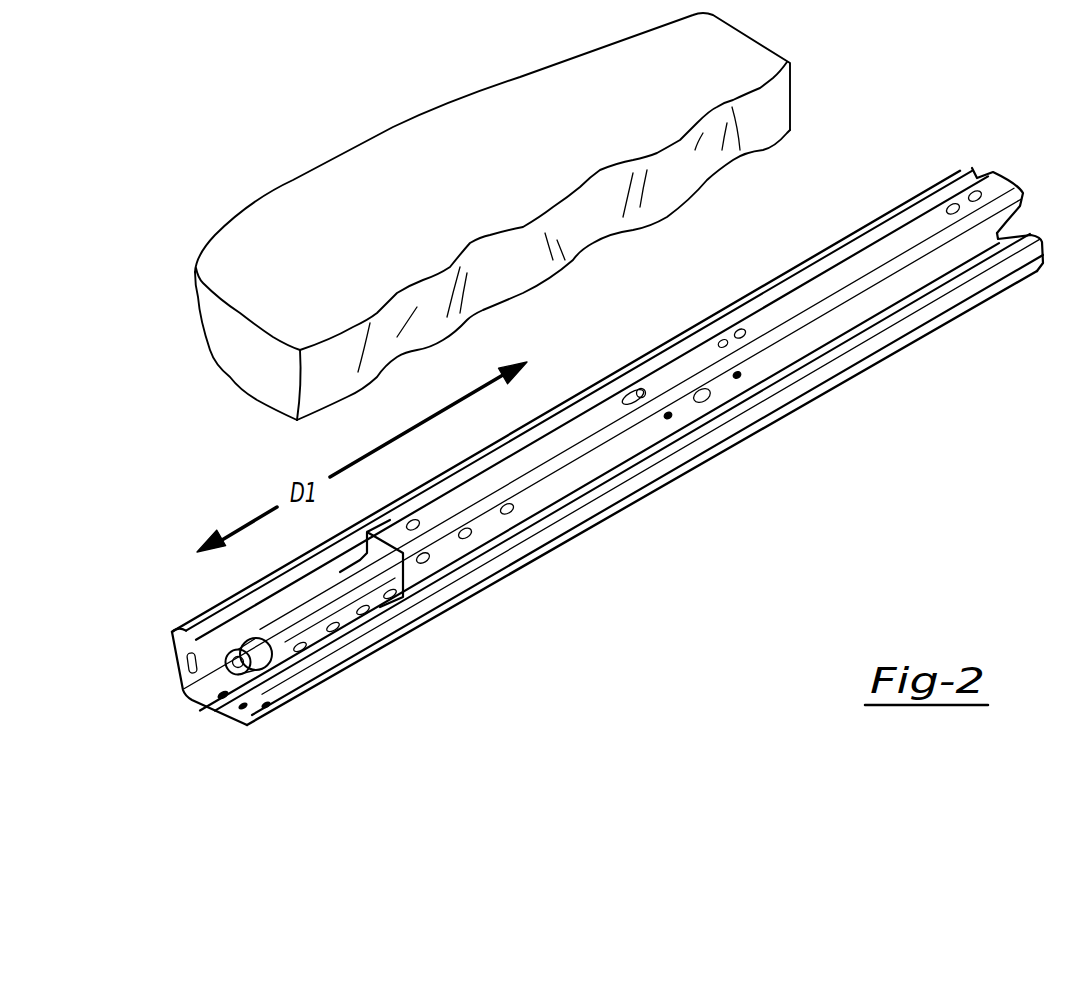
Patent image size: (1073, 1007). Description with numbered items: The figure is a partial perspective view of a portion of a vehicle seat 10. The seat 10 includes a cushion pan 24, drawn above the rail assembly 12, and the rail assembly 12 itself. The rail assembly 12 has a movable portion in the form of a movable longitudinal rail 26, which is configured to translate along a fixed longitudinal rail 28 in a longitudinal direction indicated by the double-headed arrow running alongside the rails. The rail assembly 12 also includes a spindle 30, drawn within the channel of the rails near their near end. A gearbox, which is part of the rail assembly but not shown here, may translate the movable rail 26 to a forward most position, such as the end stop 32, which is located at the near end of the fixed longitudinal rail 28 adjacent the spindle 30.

The seat 10 is at (362, 122).
The rail assembly 12 is at (166, 527).
The cushion pan 24 is at (466, 192).
The movable longitudinal rail 26 is at (682, 340).
The fixed longitudinal rail 28 is at (770, 415).
The spindle 30 is at (345, 607).
The end stop 32 is at (250, 634).